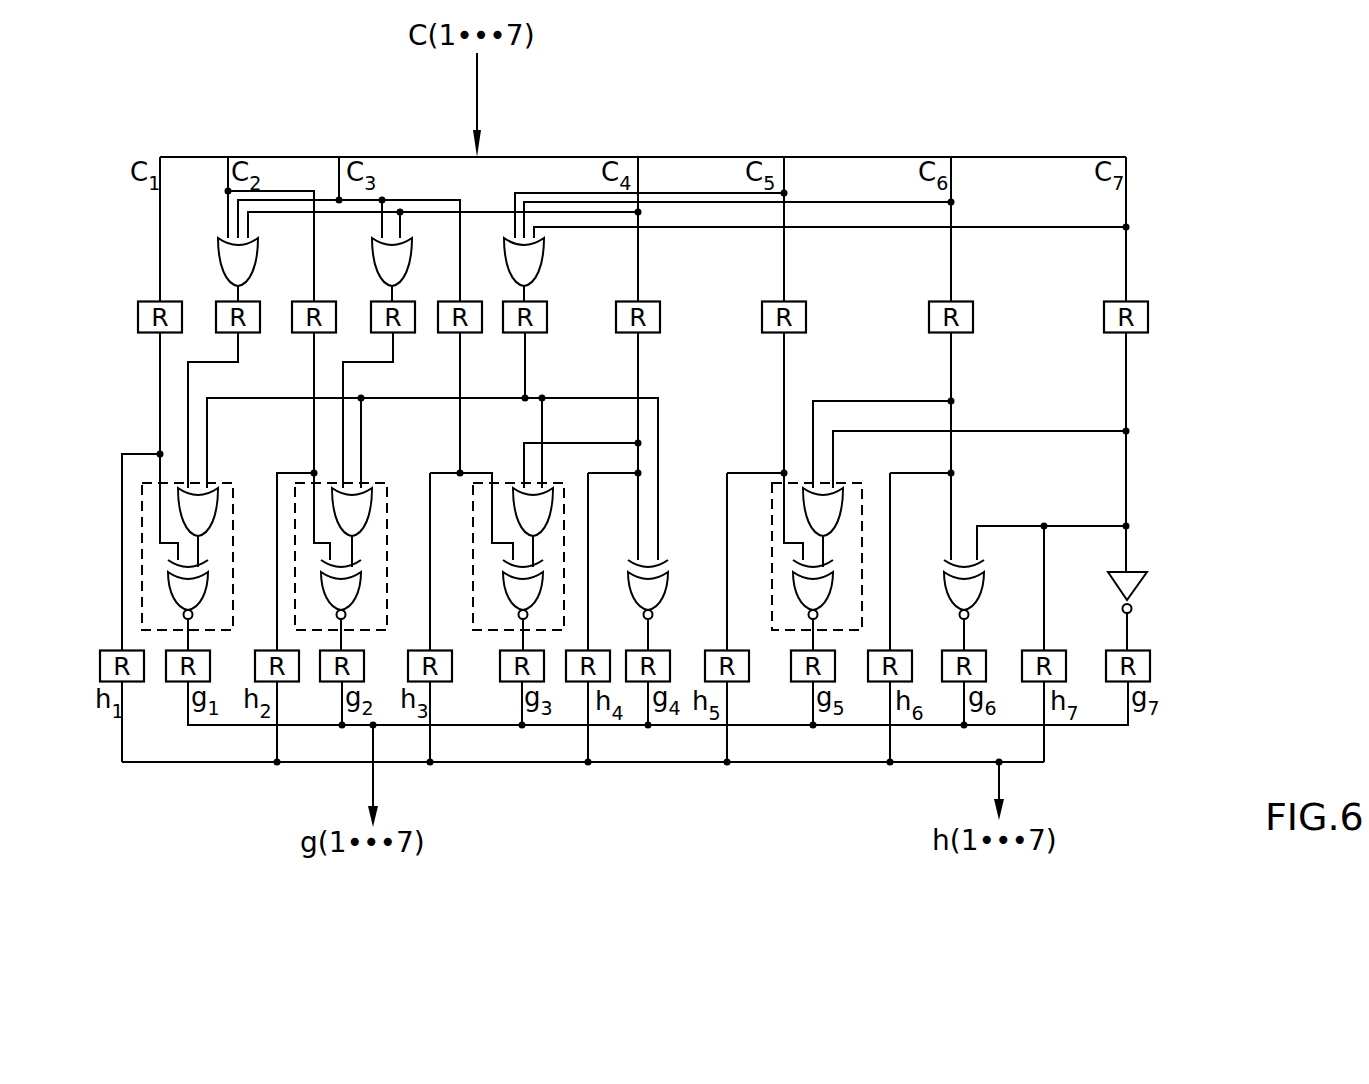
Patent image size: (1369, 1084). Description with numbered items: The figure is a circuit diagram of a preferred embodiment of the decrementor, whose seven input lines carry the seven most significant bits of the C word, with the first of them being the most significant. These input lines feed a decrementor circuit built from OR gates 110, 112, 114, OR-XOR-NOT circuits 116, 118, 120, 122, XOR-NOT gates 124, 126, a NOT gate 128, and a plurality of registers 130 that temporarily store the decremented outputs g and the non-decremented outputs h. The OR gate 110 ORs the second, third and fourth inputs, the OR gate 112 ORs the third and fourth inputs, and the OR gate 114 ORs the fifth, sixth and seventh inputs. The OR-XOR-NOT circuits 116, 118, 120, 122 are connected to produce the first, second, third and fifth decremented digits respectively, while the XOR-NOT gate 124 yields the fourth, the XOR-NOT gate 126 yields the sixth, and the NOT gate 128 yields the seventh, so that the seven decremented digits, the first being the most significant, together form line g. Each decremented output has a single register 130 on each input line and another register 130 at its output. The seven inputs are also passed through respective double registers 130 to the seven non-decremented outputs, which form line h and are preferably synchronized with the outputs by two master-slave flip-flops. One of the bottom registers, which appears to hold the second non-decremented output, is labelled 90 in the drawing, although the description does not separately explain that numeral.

The register 90 is at (268, 650).
The OR gate 110 is at (258, 278).
The OR gate 112 is at (412, 278).
The OR gate 114 is at (545, 278).
The OR-XOR-NOT circuit 116 is at (235, 497).
The OR-XOR-NOT circuit 118 is at (389, 497).
The OR-XOR-NOT circuit 120 is at (512, 481).
The OR-XOR-NOT circuit 122 is at (866, 500).
The XOR-NOT gate 124 is at (669, 592).
The XOR-NOT gate 126 is at (1010, 580).
The NOT gate 128 is at (1140, 590).
The register 130 is at (138, 318).